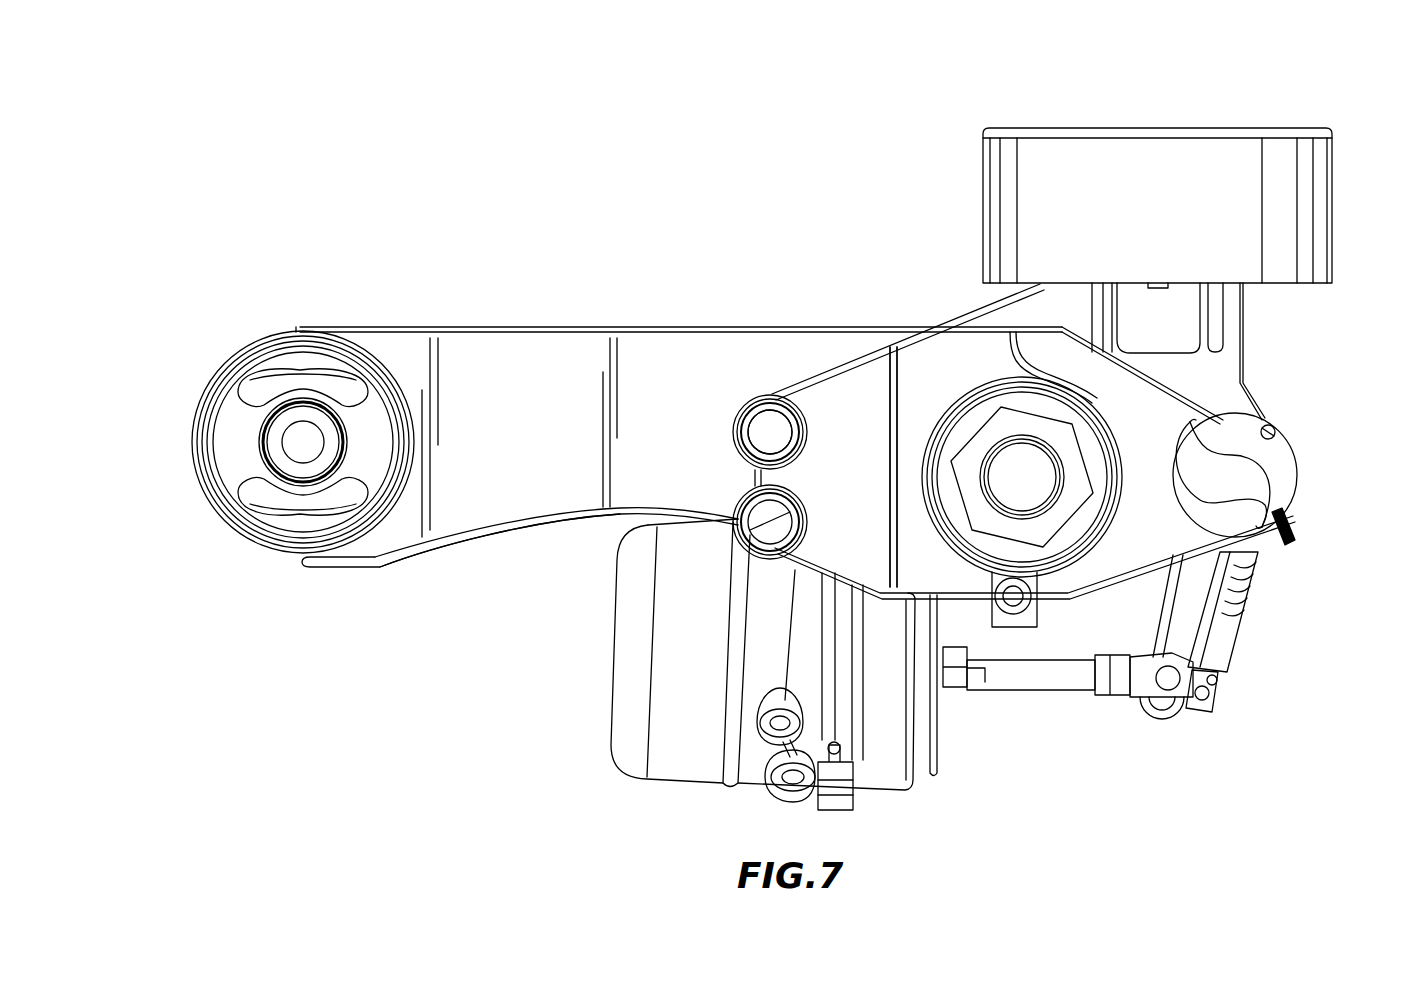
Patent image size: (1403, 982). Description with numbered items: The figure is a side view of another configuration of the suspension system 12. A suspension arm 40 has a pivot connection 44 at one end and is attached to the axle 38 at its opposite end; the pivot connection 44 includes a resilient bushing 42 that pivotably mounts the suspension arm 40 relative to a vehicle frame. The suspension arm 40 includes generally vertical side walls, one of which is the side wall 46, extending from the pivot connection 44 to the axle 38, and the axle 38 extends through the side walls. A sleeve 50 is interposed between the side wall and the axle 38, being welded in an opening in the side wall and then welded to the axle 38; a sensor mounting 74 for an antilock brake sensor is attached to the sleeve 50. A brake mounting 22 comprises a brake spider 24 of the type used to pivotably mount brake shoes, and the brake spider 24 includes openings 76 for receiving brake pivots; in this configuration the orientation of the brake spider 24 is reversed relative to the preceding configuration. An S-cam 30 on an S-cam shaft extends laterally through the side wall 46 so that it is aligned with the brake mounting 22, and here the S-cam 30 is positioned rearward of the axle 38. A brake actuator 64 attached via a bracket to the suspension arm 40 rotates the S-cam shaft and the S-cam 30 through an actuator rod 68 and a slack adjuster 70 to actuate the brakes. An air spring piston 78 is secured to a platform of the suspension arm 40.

The suspension system 12 is at (376, 170).
The air spring piston 78 is at (1010, 126).
The suspension arm 40 is at (622, 324).
The brake mounting 22 is at (868, 384).
The pivot connection 44 is at (214, 378).
The resilient bushing 42 is at (258, 532).
The side wall 46 is at (492, 537).
The brake spider 24 is at (768, 396).
The openings 76 is at (770, 428).
The sleeve 50 is at (982, 392).
The axle 38 is at (988, 528).
The S-cam 30 is at (1290, 492).
The slack adjuster 70 is at (1292, 548).
The sensor mounting 74 is at (1040, 612).
The actuator rod 68 is at (1050, 688).
The brake actuator 64 is at (655, 780).